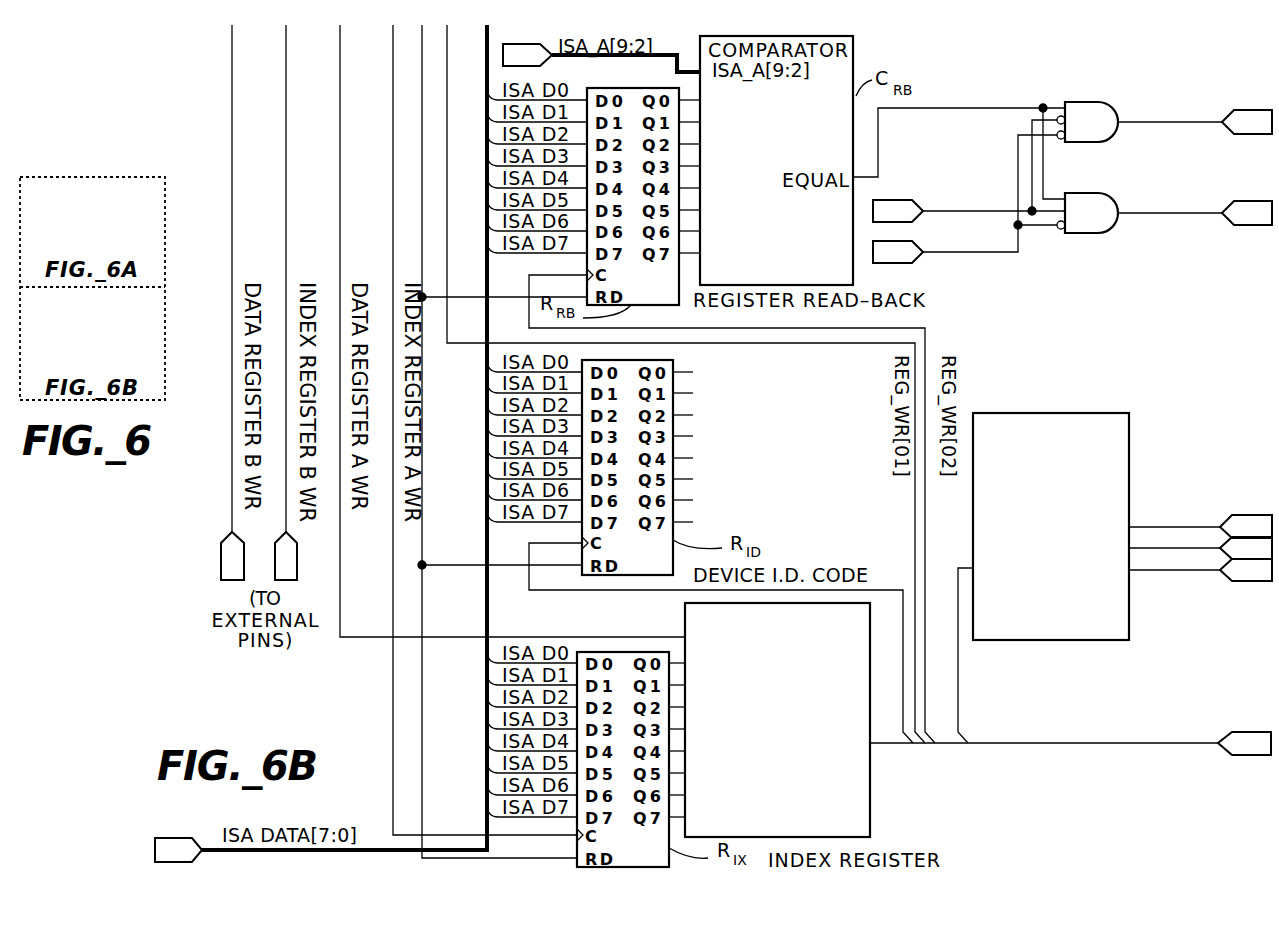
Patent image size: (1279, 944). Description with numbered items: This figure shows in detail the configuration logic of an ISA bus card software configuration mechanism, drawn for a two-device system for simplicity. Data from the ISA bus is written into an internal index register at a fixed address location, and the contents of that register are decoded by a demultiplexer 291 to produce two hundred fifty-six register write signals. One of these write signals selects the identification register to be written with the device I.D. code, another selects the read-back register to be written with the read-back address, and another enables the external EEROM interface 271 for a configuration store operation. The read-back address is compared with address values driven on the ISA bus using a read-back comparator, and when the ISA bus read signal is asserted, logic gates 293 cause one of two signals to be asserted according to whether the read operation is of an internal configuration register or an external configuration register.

The logic gates 293 is at (1082, 98).
The external EEROM interface 271 is at (1047, 413).
The demultiplexer 291 is at (870, 800).